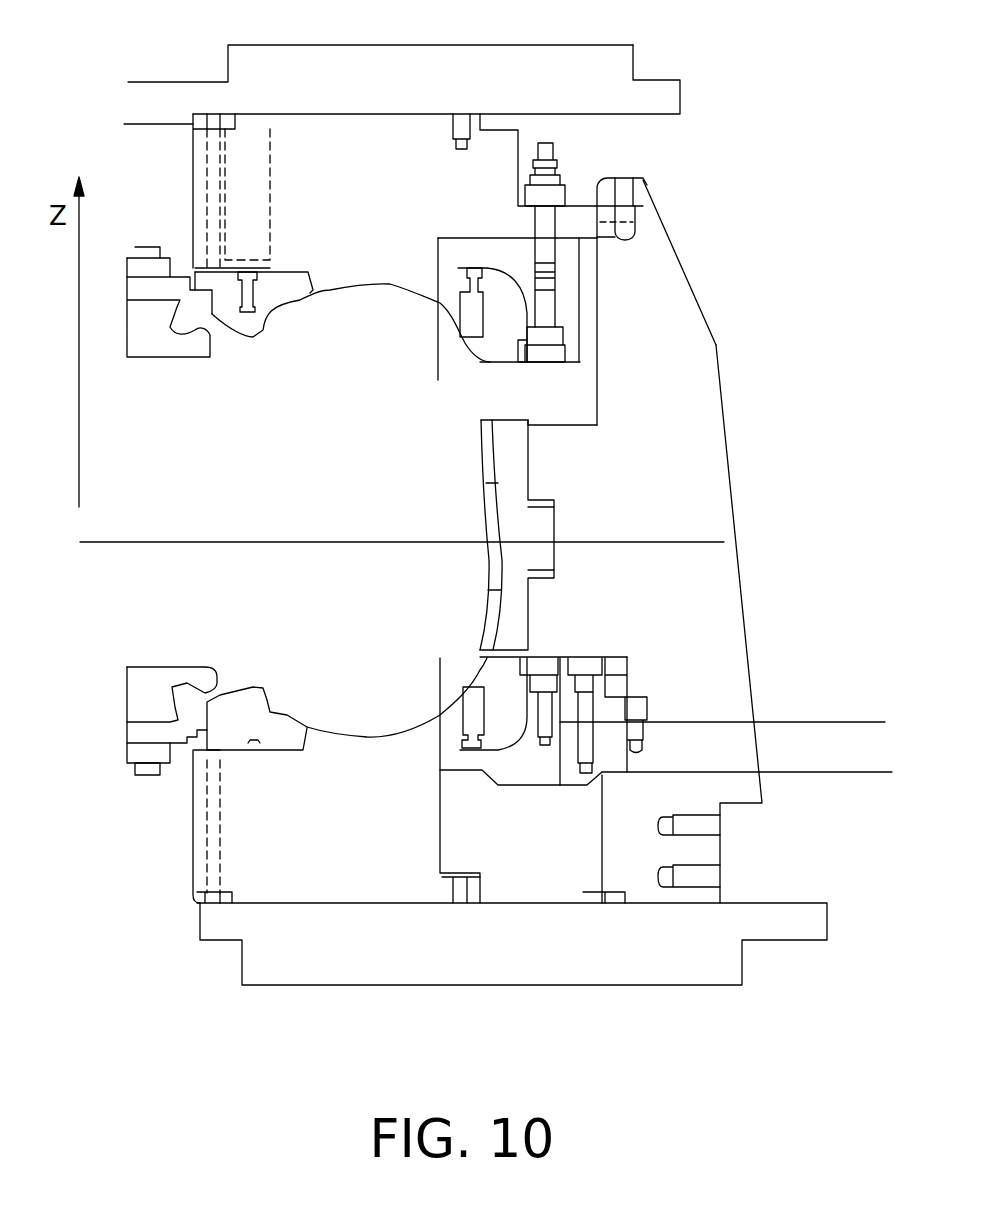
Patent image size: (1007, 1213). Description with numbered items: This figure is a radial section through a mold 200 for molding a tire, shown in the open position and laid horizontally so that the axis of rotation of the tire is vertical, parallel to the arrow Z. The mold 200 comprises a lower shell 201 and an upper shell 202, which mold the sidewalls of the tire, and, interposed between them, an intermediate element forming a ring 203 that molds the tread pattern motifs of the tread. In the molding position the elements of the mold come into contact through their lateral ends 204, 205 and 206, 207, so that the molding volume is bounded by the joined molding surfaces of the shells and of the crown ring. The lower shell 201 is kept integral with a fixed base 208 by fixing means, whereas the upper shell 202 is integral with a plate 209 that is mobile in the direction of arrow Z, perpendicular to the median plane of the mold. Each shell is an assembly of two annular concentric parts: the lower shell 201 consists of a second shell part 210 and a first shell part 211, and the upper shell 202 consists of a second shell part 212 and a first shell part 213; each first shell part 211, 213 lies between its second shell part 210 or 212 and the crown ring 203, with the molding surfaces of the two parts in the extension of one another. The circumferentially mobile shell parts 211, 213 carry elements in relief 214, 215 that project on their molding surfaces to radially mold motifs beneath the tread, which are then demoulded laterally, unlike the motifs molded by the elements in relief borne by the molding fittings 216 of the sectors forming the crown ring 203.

The mold 200 is at (712, 278).
The lower shell 201 is at (337, 858).
The upper shell 202 is at (395, 145).
The ring 203 is at (702, 510).
The lateral end 204 is at (535, 363).
The lateral end 205 is at (505, 418).
The lateral end 206 is at (510, 650).
The lateral end 207 is at (527, 657).
The fixed base 208 is at (637, 947).
The plate 209 is at (605, 82).
The second shell part 210 is at (260, 862).
The first shell part 211 is at (455, 740).
The second shell part 212 is at (363, 263).
The first shell part 213 is at (463, 270).
The element in relief 214 is at (456, 332).
The element in relief 215 is at (463, 687).
The molding fitting 216 is at (492, 528).